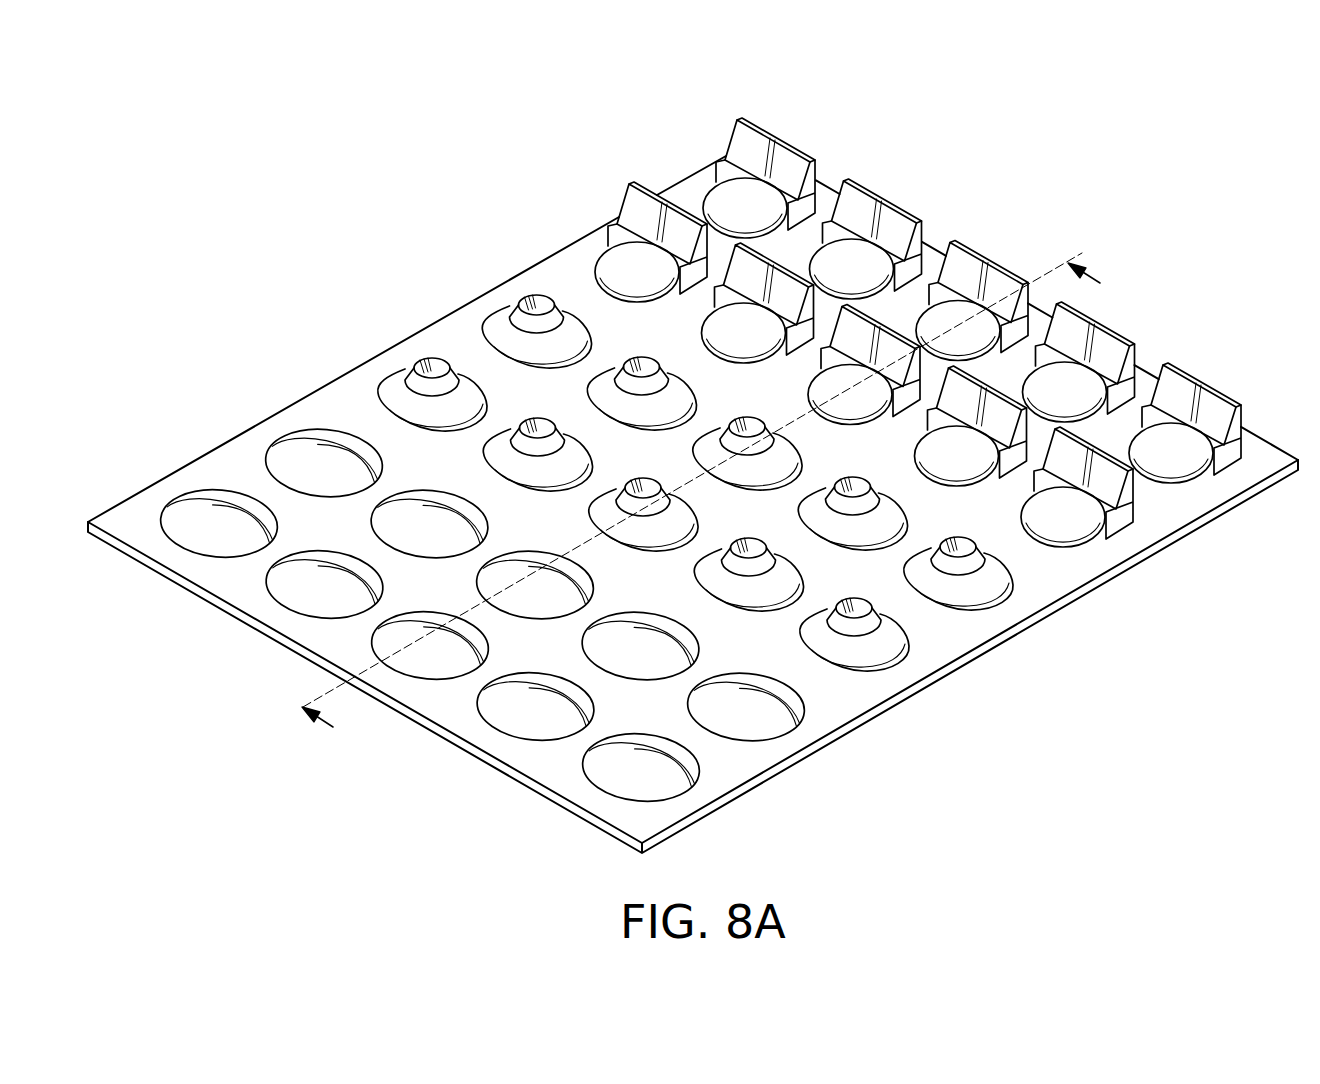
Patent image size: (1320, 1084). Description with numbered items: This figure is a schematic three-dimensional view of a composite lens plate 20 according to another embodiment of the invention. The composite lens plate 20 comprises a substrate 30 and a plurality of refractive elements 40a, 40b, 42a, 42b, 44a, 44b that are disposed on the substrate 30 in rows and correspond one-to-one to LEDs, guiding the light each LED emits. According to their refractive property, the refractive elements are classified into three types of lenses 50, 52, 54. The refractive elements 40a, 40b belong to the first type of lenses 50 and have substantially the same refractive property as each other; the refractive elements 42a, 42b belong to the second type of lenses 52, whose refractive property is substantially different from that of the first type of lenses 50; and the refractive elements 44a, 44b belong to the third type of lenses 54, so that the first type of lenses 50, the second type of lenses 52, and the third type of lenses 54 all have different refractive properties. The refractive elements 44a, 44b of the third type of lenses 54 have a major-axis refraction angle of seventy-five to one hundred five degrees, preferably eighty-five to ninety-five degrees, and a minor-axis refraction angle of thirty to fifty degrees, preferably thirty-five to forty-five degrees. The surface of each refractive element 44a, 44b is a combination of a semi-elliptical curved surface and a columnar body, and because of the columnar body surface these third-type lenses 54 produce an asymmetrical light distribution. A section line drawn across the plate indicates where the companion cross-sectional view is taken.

The composite lens plate 20 is at (698, 456).
The substrate 30 is at (1268, 445).
The refractive element 40a is at (203, 497).
The refractive element 40b is at (288, 452).
The refractive element 42a is at (437, 362).
The refractive element 42b is at (531, 300).
The refractive element 44a is at (633, 208).
The refractive element 44b is at (740, 145).
The first type of lenses 50 is at (265, 450).
The second type of lenses 52 is at (485, 319).
The third type of lenses 54 is at (701, 181).